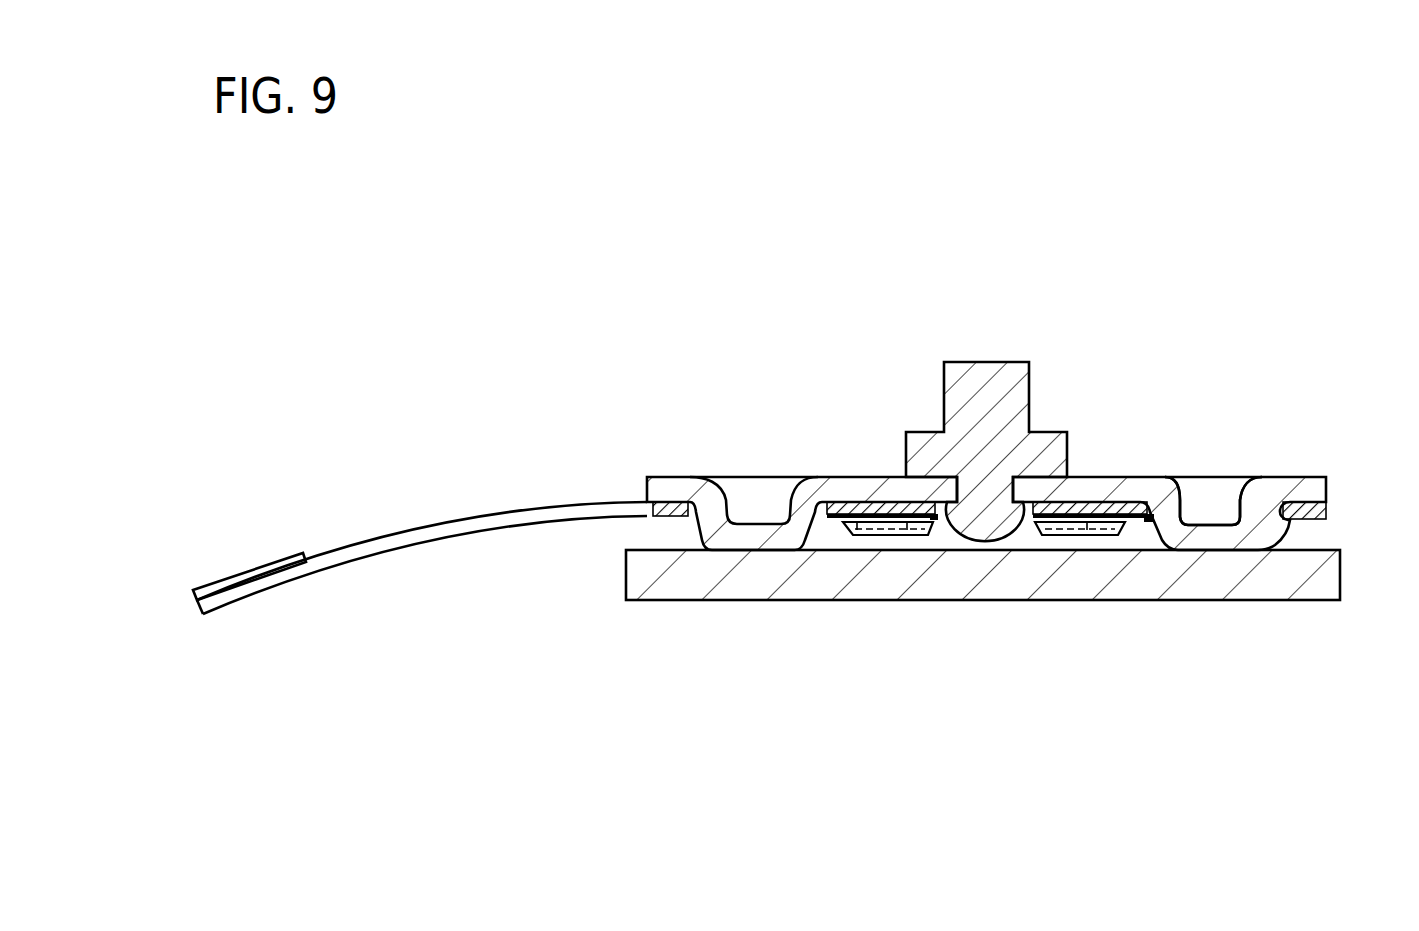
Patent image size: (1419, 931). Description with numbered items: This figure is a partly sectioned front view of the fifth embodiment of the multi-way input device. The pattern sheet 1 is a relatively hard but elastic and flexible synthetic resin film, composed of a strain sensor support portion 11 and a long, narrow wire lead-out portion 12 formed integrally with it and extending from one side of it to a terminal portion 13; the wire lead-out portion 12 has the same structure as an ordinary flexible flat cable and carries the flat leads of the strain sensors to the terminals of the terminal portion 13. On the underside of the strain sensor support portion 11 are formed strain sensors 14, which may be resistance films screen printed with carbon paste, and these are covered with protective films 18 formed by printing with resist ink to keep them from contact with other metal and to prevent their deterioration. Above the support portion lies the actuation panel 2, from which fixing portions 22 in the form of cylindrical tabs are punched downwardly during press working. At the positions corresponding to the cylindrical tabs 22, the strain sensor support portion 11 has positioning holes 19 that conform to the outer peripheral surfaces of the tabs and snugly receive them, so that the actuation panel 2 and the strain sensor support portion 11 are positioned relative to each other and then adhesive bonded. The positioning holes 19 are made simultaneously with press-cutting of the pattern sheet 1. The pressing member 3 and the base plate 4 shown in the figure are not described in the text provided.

The pattern sheet 1 is at (425, 514).
The actuation panel 2 is at (997, 474).
The pressing boss 3 is at (1008, 356).
The base plate 4 is at (1242, 605).
The strain sensor support portion 11 is at (875, 500).
The wire lead-out portion 12 is at (517, 506).
The terminal portion 13 is at (260, 566).
The strain sensor 14 is at (907, 542).
The protective film 18 is at (872, 536).
The positioning hole 19 is at (1280, 514).
The fixing portion 22 is at (1220, 523).